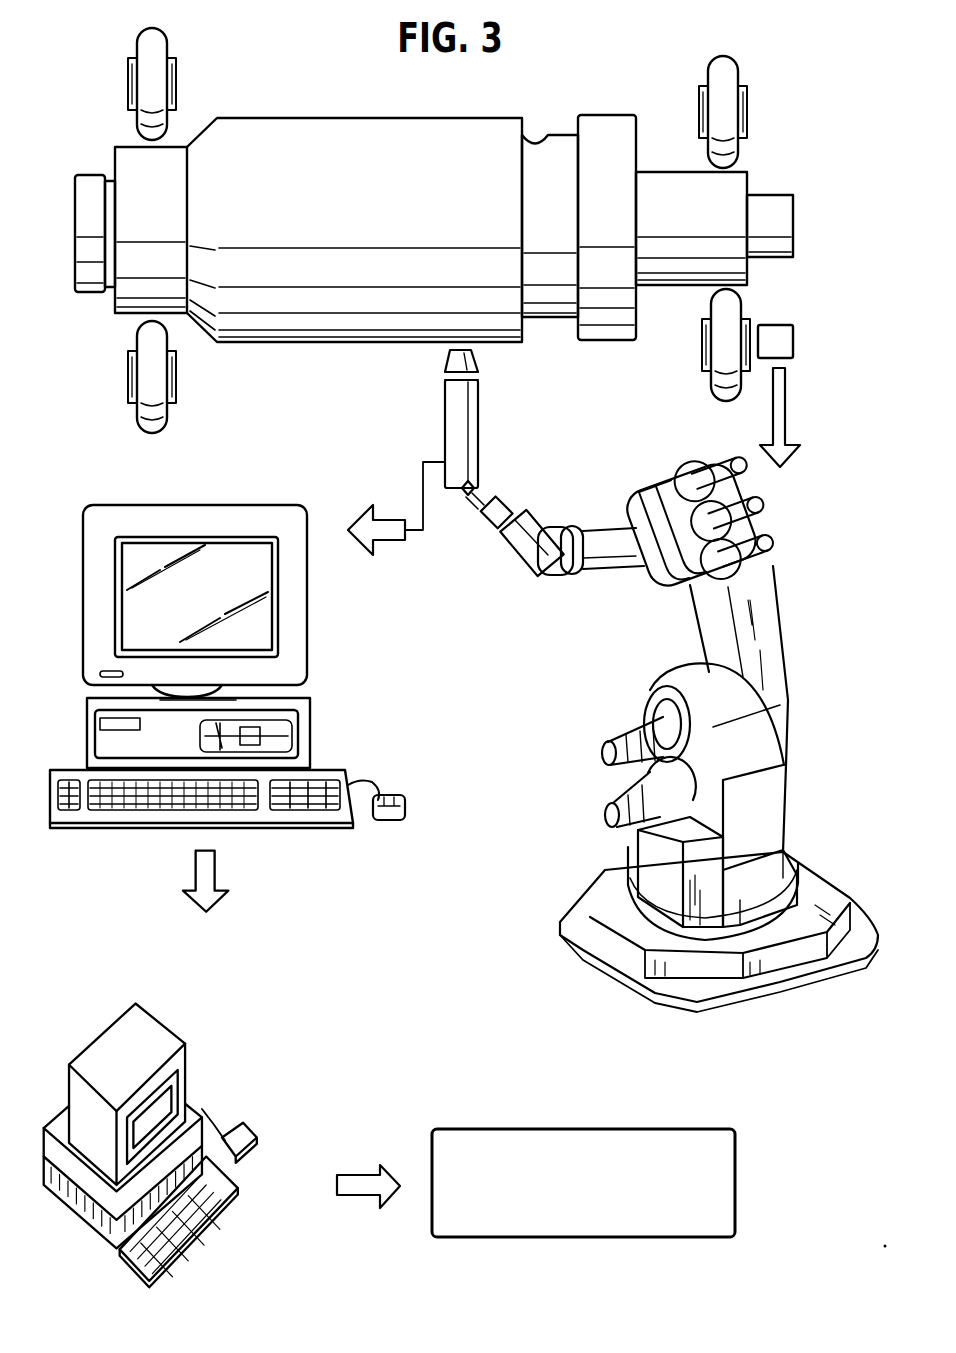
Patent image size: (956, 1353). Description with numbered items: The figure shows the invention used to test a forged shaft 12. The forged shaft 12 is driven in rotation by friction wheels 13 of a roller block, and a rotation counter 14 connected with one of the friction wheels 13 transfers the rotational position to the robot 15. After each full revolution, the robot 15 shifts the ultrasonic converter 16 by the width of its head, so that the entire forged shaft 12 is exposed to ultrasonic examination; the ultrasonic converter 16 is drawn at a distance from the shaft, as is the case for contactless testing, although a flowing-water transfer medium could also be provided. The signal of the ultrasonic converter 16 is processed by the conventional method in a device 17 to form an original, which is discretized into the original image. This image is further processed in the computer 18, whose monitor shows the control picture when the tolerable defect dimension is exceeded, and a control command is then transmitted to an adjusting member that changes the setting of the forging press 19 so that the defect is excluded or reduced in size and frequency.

The forged shaft 12 is at (272, 150).
The friction wheels 13 is at (168, 132).
The rotation counter 14 is at (778, 340).
The robot 15 is at (765, 622).
The ultrasonic converter 16 is at (470, 418).
The device 17 is at (291, 630).
The computer 18 is at (177, 1057).
The forging press 19 is at (543, 1146).